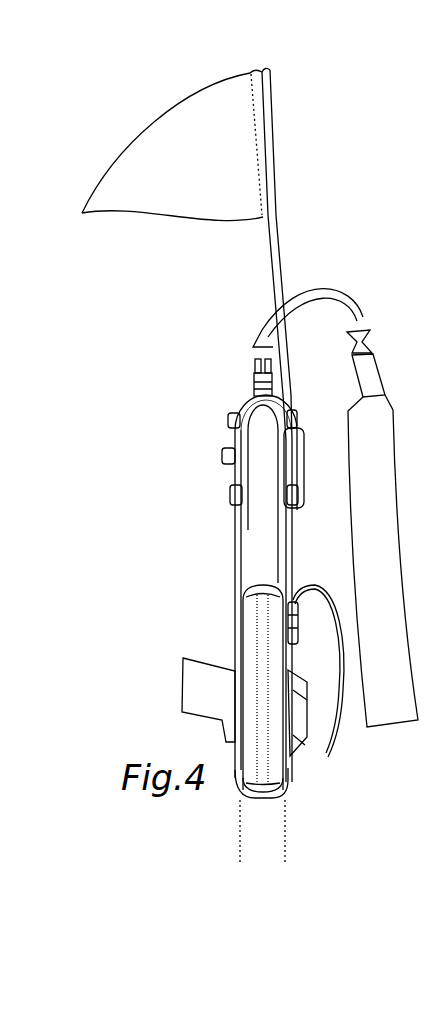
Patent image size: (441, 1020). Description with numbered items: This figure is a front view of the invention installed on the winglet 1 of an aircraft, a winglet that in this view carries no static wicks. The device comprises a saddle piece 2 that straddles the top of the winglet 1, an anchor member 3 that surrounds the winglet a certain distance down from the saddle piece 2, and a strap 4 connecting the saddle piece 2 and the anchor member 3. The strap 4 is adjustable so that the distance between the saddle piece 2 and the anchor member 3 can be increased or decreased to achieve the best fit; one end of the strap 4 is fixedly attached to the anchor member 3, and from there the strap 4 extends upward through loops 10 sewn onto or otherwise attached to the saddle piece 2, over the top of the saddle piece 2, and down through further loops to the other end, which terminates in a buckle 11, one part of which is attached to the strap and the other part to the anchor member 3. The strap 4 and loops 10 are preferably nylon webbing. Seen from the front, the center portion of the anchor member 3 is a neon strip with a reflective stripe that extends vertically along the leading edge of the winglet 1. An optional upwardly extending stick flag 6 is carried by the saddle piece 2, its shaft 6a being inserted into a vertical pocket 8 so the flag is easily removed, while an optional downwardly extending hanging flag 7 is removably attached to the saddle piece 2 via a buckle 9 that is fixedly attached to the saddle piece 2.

The winglet 1 is at (236, 538).
The saddle piece 2 is at (214, 399).
The anchor member 3 is at (299, 774).
The strap 4 is at (234, 593).
The upwardly extending stick flag 6 is at (148, 137).
The shaft 6a is at (270, 265).
The downwardly extending hanging flag 7 is at (395, 410).
The vertical pocket 8 is at (306, 470).
The buckle 9 is at (255, 368).
The loops 10 is at (230, 421).
The buckle 11 is at (300, 630).